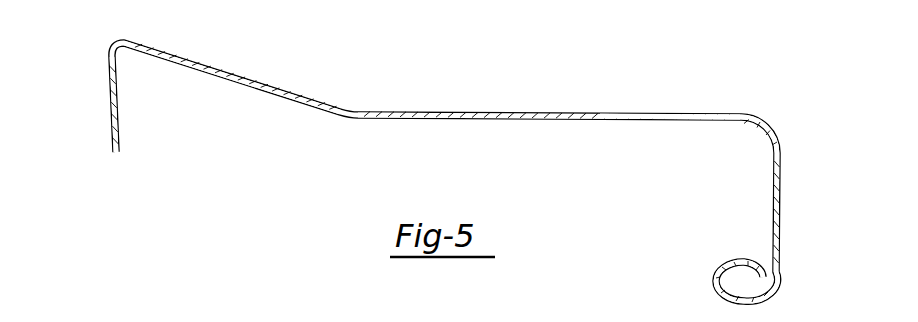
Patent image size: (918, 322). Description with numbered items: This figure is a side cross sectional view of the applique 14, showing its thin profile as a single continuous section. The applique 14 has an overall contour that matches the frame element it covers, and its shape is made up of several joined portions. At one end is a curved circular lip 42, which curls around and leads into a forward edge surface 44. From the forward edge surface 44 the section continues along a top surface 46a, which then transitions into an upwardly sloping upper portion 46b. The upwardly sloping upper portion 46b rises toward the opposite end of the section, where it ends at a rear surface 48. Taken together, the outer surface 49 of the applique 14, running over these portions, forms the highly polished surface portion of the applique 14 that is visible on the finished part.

The spring clip 14 is at (742, 95).
The curled end loop 42 is at (707, 295).
The vertical leg 44 is at (781, 218).
The first bend 46a is at (627, 113).
The inclined portion 46b is at (238, 74).
The end tab 48 is at (112, 109).
The planar body portion 49 is at (484, 111).